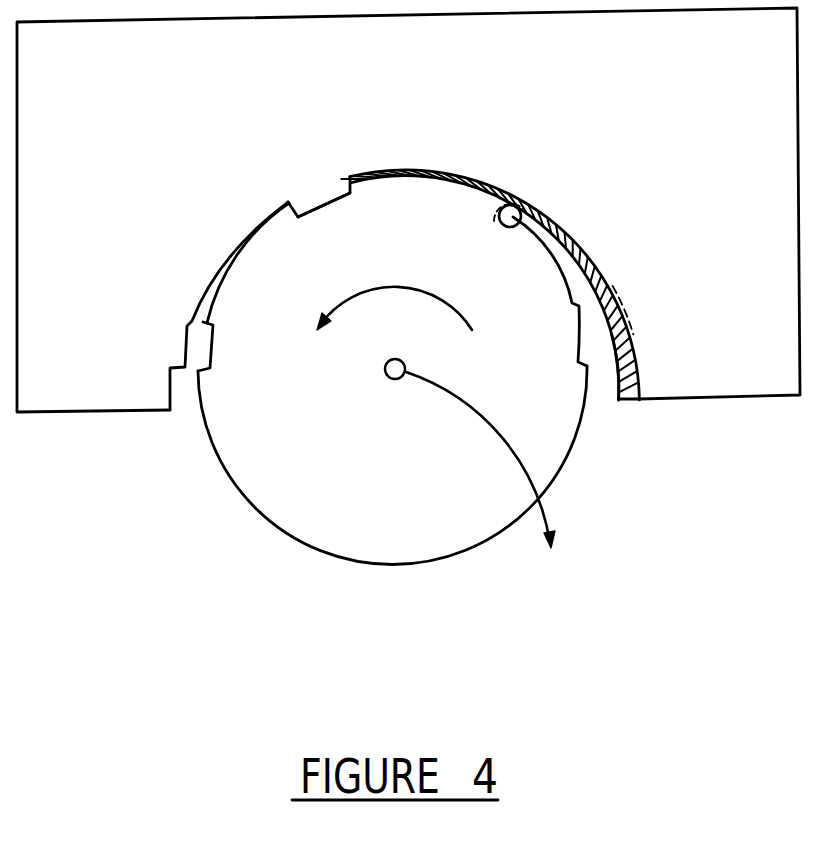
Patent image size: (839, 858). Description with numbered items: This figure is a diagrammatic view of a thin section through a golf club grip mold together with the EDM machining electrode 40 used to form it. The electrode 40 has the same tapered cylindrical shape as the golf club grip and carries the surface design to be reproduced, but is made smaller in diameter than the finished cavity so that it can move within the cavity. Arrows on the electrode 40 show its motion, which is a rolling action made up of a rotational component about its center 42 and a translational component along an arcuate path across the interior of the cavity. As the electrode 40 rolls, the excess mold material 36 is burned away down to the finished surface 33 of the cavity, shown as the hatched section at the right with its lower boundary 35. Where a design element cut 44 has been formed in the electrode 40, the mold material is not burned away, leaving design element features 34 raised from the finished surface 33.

The finished surface 33 is at (634, 363).
The design element features 34 is at (332, 192).
The inner edge of lining 35 is at (617, 388).
The excess mold material 36 is at (630, 398).
The EDM electrode 40 is at (233, 487).
The wheel axis 42 is at (388, 378).
The design element cut 44 is at (318, 210).